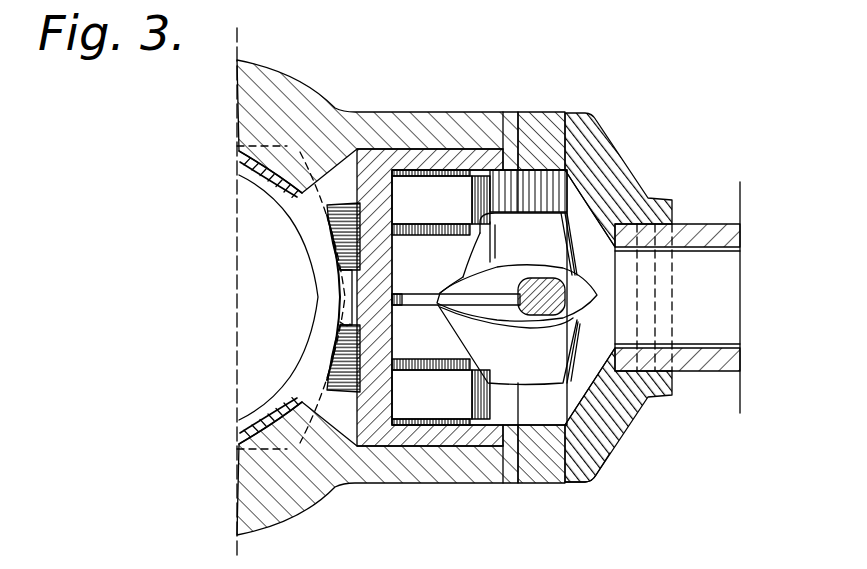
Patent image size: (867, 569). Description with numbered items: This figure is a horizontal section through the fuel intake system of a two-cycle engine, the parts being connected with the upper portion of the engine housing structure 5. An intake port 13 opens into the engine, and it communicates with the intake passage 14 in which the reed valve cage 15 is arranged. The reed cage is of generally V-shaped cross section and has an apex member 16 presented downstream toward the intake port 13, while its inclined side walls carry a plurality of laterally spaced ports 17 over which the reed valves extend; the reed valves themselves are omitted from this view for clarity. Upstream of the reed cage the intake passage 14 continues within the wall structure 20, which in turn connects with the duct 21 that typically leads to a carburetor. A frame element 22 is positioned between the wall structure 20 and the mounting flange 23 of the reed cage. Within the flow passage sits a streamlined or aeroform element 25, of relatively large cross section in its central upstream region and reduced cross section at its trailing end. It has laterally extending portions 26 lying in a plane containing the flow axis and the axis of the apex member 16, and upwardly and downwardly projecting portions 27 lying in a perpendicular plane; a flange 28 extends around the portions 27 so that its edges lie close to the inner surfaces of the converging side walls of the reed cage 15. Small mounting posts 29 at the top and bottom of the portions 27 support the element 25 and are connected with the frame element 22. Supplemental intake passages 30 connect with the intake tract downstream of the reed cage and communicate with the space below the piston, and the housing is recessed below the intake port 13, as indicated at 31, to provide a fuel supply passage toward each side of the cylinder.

The upper portion of housing structure 5 is at (291, 84).
The intake port 13 is at (320, 246).
The intake passage 14 is at (355, 430).
The reed valve cage 15 is at (479, 432).
The apex member 16 is at (366, 287).
The ports 17 is at (418, 186).
The wall structure 20 is at (598, 460).
The duct 21 is at (697, 232).
The frame element 22 is at (552, 484).
The mounting flange 23 is at (507, 120).
The streamlined element 25 is at (586, 243).
The laterally extending portions 26 is at (530, 221).
The upwardly and downwardly projecting portions 27 is at (493, 280).
The flange 28 is at (449, 289).
The mounting posts 29 is at (598, 294).
The supplemental intake passages 30 is at (300, 126).
The recess 31 is at (343, 322).